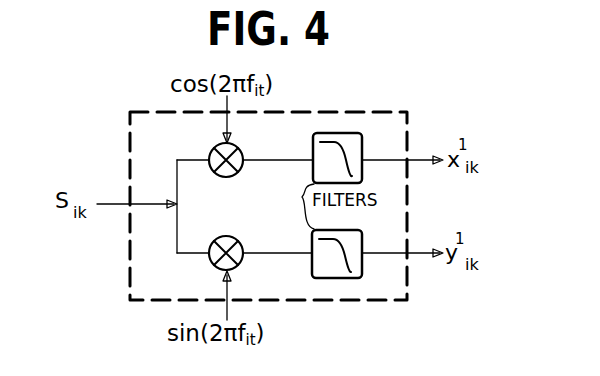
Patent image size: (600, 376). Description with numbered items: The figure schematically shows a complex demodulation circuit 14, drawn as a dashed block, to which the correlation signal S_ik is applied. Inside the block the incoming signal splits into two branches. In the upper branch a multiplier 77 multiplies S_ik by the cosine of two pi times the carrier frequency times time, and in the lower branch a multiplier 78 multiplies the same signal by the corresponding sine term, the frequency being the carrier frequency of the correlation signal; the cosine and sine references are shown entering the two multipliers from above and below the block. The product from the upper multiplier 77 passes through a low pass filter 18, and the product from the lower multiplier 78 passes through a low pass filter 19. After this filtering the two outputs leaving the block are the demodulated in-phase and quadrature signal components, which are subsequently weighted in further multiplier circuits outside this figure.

The complex demodulation circuit 14 is at (350, 111).
The multiplier 77 is at (239, 147).
The multiplier 78 is at (239, 240).
The low pass filter 18 is at (362, 146).
The low pass filter 19 is at (362, 239).